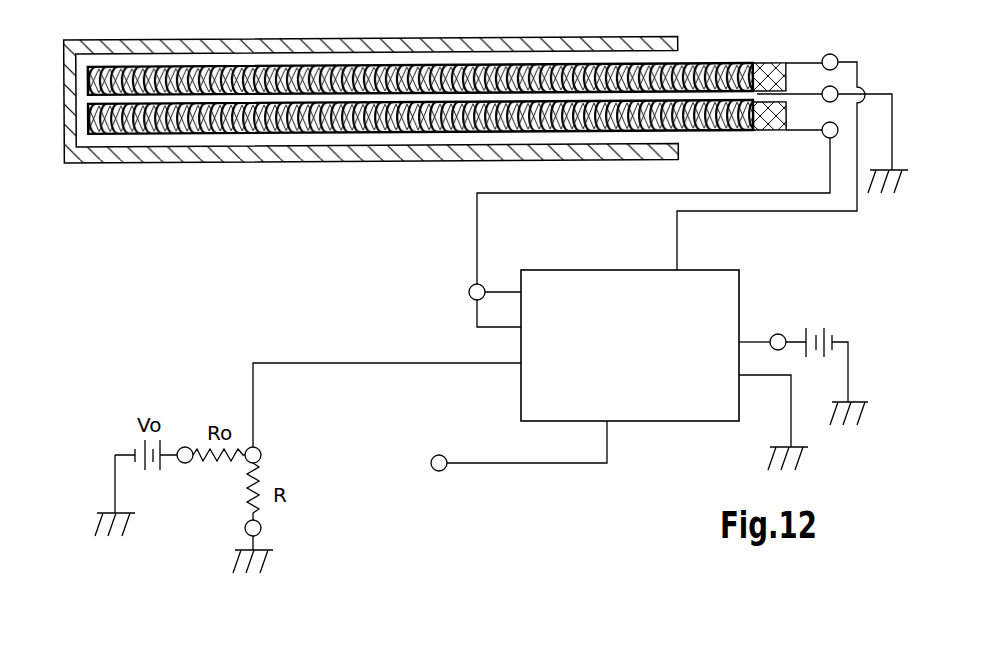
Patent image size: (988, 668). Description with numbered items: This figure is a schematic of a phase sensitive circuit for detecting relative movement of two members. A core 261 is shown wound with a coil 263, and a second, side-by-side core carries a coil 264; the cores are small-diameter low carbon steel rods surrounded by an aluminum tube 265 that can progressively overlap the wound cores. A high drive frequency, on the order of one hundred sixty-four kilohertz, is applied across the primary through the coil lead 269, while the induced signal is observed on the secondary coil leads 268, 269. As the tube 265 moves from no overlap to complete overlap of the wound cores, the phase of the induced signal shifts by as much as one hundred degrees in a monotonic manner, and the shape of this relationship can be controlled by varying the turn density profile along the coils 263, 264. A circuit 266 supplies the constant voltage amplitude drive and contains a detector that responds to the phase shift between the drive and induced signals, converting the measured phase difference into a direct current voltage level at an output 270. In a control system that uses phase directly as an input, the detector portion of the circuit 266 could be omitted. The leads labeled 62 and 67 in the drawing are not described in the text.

The core 261 is at (770, 66).
The secondary coil lead 268 is at (798, 62).
The coil lead 269 is at (808, 93).
The second coil end core 62 is at (768, 124).
The second coil terminal 67 is at (805, 134).
The aluminum tube 265 is at (101, 156).
The coil 264 is at (182, 136).
The coil 263 is at (268, 84).
The circuit 266 is at (731, 312).
The output 270 is at (433, 468).